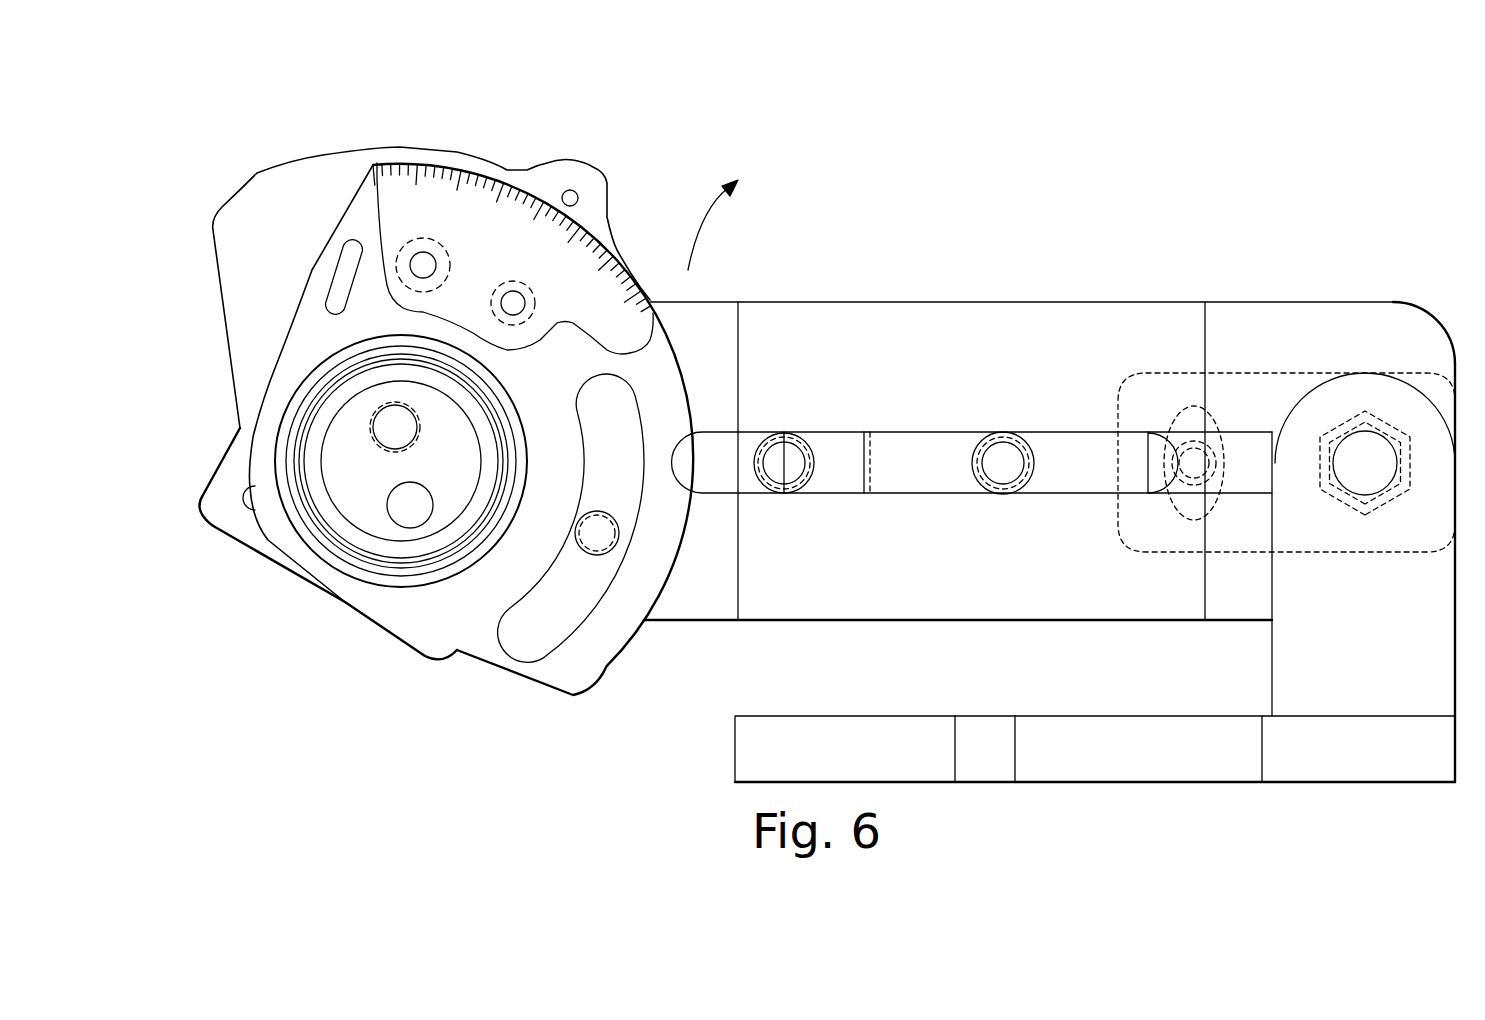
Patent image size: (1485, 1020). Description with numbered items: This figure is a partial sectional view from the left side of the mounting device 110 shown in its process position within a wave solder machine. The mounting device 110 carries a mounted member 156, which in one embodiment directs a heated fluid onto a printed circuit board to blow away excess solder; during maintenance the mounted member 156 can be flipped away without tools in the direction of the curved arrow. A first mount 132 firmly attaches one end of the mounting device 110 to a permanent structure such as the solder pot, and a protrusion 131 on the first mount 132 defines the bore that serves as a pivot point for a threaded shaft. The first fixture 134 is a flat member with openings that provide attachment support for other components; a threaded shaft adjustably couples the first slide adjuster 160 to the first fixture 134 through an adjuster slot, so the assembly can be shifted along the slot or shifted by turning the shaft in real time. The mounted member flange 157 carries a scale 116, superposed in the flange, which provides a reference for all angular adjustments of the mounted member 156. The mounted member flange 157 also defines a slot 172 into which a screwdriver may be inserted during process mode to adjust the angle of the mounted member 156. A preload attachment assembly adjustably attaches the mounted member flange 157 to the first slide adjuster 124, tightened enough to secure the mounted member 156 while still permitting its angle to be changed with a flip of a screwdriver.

The mounting device 110 is at (1176, 122).
The scale 116 is at (496, 242).
The first slide adjuster 124 is at (700, 607).
The protrusion 131 is at (1280, 662).
The first mount 132 is at (1330, 768).
The first fixture 134 is at (1295, 320).
The mounted member 156 is at (217, 510).
The mounted member flange 157 is at (363, 173).
The first slide adjuster 160 is at (240, 297).
The slot 172 is at (337, 280).